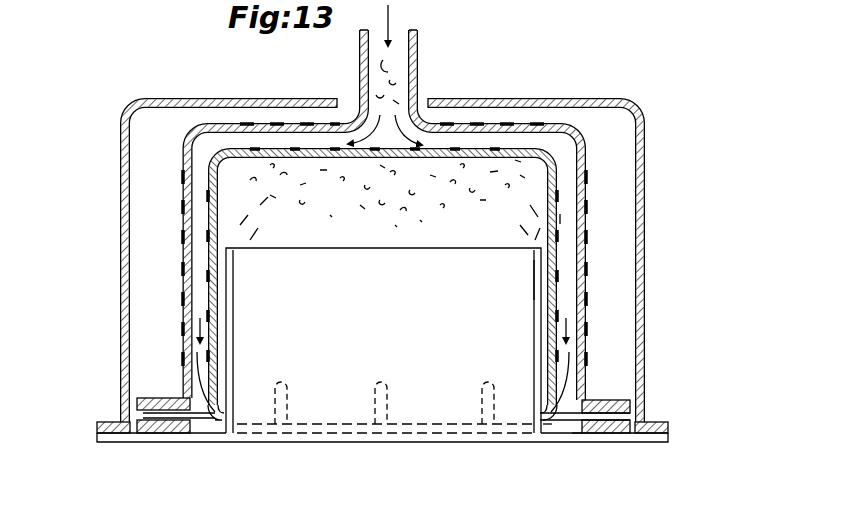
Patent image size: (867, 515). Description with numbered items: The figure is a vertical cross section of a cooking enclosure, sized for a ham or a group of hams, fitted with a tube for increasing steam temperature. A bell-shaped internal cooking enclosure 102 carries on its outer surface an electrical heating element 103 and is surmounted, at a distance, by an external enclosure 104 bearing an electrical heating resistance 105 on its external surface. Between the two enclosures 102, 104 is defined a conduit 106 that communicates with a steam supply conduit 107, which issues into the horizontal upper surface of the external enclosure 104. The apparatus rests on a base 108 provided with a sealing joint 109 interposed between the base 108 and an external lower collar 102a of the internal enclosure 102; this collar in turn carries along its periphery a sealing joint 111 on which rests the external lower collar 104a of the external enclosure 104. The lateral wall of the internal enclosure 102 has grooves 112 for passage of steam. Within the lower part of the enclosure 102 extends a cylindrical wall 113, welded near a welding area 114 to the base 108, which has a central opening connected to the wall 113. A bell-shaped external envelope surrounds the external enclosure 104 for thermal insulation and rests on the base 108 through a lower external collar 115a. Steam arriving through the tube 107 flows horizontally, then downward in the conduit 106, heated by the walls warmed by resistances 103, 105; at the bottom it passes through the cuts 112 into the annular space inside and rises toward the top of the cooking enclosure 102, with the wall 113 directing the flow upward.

The internal cooking enclosure 102 is at (558, 202).
The external lower collar 102a is at (577, 434).
The electrical heating element 103 is at (563, 219).
The external enclosure 104 is at (566, 142).
The external lower collar 104a is at (603, 400).
The electrical heating resistance 105 is at (562, 105).
The conduit 106 is at (563, 170).
The steam supply conduit 107 is at (416, 50).
The base 108 is at (462, 438).
The sealing joint 109 is at (610, 432).
The sealing joint 111 is at (617, 403).
The grooves 112 is at (380, 402).
The cylindrical wall 113 is at (536, 402).
The welding area 114 is at (550, 442).
The lower external collar 115a is at (660, 424).